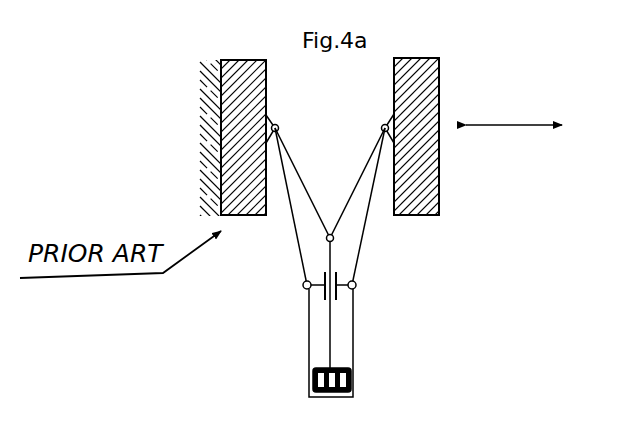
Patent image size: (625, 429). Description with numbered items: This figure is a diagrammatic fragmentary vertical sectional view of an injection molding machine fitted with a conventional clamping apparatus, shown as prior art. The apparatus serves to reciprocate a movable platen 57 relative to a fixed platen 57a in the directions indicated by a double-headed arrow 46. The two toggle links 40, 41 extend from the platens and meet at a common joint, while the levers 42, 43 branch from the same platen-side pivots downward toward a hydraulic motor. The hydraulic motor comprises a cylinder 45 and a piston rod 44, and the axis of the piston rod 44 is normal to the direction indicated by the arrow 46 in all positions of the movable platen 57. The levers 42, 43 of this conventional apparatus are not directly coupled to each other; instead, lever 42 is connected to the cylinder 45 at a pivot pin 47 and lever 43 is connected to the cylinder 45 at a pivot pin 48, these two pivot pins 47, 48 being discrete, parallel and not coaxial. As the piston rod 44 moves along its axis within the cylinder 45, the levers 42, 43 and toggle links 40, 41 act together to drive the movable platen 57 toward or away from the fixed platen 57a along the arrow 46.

The fixed platen 57a is at (243, 64).
The movable platen 57 is at (437, 78).
The double-headed arrow 46 is at (514, 125).
The toggle link 41 is at (303, 164).
The toggle link 40 is at (362, 164).
The lever 43 is at (298, 246).
The lever 42 is at (362, 246).
The pivot pin 48 is at (303, 285).
The pivot pin 47 is at (356, 285).
The piston rod 44 is at (333, 322).
The cylinder 45 is at (309, 320).